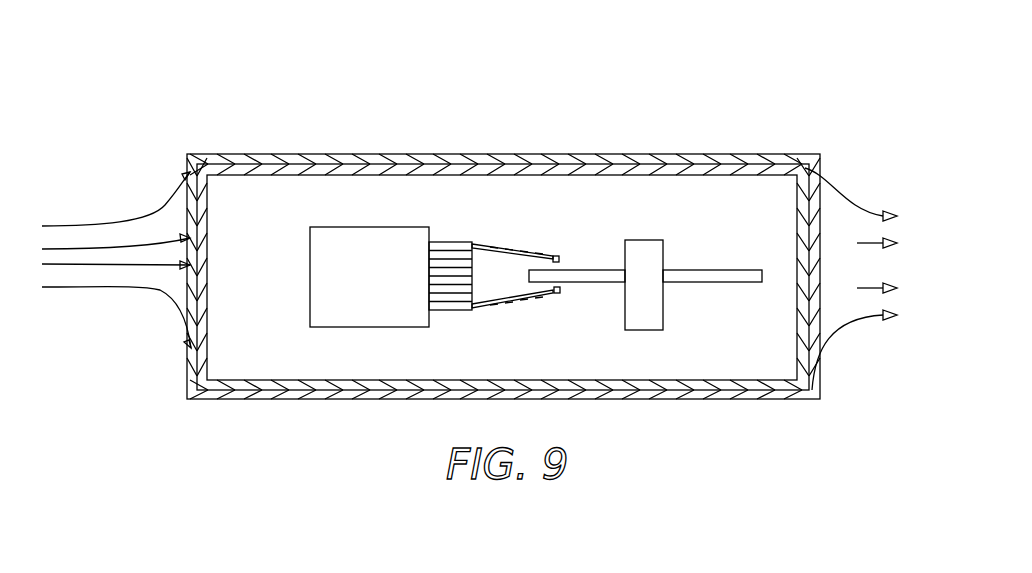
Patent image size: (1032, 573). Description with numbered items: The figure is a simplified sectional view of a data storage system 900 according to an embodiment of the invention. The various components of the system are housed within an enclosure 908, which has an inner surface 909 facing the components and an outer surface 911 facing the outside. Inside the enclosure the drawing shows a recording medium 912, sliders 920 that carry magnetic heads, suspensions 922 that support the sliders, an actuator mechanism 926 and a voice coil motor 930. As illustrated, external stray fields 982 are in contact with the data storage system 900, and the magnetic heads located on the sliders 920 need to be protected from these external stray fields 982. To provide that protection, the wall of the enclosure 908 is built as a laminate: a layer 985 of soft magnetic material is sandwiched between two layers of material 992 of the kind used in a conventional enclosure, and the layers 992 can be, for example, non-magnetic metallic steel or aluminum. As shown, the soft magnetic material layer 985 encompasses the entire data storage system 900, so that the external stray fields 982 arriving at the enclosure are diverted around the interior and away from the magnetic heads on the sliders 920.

The data storage system 900 is at (763, 135).
The enclosure 908 is at (783, 398).
The inner surface 909 is at (697, 380).
The outer surface 911 is at (670, 402).
The layer of soft magnetic material 985 is at (656, 157).
The layers of material 992 is at (523, 173).
The voice coil motor 930 is at (387, 290).
The actuator mechanism 926 is at (452, 238).
The suspensions 922 is at (512, 247).
The sliders 920 is at (561, 259).
The recording medium 912 is at (700, 262).
The external stray fields 982 is at (125, 288).